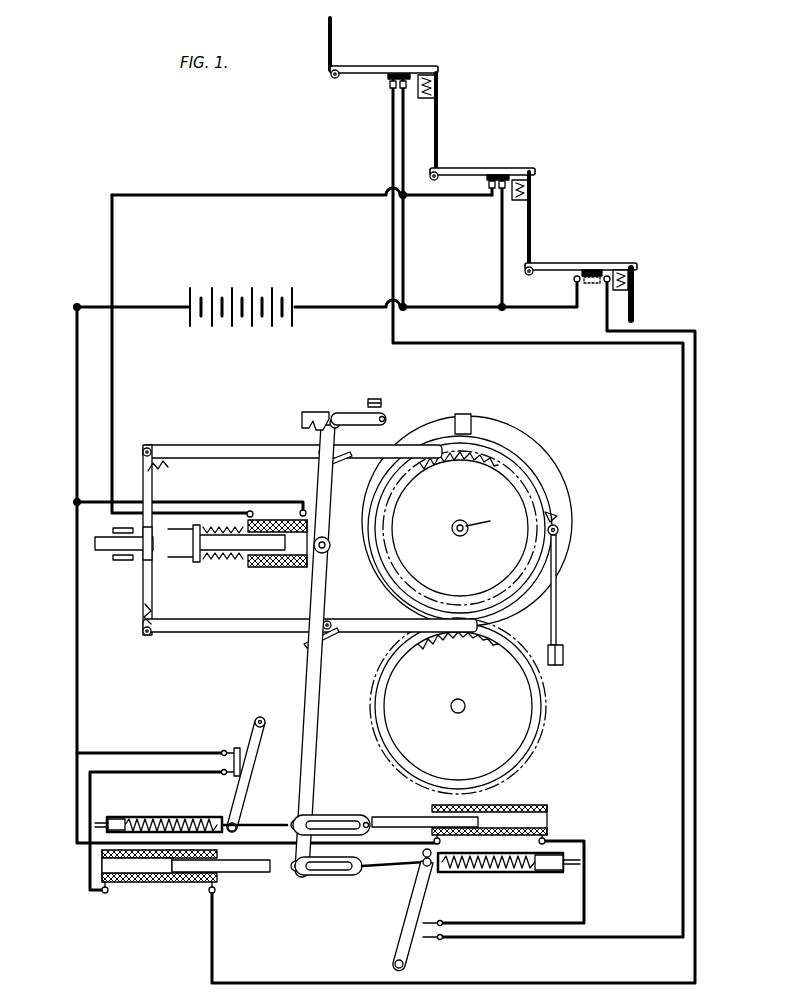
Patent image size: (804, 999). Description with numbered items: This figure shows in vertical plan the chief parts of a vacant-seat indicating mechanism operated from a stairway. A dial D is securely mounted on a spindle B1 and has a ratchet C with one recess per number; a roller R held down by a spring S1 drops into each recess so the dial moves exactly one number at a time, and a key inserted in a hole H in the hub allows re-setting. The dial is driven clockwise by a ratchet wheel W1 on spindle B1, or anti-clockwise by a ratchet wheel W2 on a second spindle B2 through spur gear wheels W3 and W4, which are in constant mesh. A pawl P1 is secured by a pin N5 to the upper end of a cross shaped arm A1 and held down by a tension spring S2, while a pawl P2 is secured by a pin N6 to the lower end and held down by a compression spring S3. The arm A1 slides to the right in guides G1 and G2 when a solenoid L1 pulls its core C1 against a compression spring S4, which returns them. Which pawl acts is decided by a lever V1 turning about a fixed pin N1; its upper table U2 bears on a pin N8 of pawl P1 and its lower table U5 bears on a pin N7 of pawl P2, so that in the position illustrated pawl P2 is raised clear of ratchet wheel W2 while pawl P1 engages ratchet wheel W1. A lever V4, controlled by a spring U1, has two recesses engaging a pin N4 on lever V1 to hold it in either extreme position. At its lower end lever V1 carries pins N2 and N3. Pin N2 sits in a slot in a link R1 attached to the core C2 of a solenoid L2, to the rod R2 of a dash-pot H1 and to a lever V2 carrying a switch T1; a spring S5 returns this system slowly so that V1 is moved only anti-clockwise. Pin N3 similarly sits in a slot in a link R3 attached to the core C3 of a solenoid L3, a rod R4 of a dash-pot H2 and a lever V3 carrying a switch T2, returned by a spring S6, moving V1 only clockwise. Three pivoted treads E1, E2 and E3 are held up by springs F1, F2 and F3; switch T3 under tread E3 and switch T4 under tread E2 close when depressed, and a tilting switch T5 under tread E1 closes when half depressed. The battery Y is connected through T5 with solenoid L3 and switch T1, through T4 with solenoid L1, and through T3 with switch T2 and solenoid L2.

The tread E3 is at (363, 67).
The switch T3 is at (388, 78).
The spring F3 is at (438, 84).
The tread E2 is at (451, 169).
The switch T4 is at (487, 182).
The spring F2 is at (531, 188).
The tread E1 is at (555, 263).
The tilting switch T5 is at (577, 279).
The spring F1 is at (636, 284).
The electrical battery Y is at (237, 291).
The dial D is at (500, 426).
The spur gear wheel W3 is at (530, 461).
The ratchet wheel W1 is at (458, 462).
The spindle B1 is at (452, 527).
The hole H is at (485, 520).
The ratchet C is at (556, 516).
The roller R is at (559, 532).
The spring S1 is at (565, 600).
The spur gear wheel W4 is at (543, 741).
The ratchet wheel W2 is at (458, 648).
The spindle B2 is at (451, 707).
The pawl P1 is at (215, 445).
The pin N5 is at (149, 448).
The spring S2 is at (158, 467).
The pin N8 is at (320, 455).
The upper table U2 is at (326, 462).
The pawl P2 is at (198, 626).
The pin N6 is at (144, 637).
The spring S3 is at (152, 630).
The pin N7 is at (330, 623).
The lower table U5 is at (305, 643).
The cross shaped arm A1 is at (198, 540).
The solenoid L1 is at (293, 568).
The core C1 is at (246, 551).
The spring S4 is at (216, 556).
The guide G2 is at (191, 558).
The guide G1 is at (125, 562).
The lever V1 is at (306, 680).
The pin N1 is at (324, 554).
The lever V4 is at (319, 411).
The pin N4 is at (341, 428).
The spring U1 is at (368, 406).
The switch T1 is at (236, 752).
The lever V2 is at (255, 774).
The spring S5 is at (170, 818).
The dash-pot H1 is at (118, 817).
The rod R2 is at (254, 837).
The pin N2 is at (293, 820).
The link R1 is at (341, 815).
The solenoid L2 is at (515, 806).
The core C2 is at (410, 820).
The solenoid L3 is at (131, 881).
The core C3 is at (228, 869).
The pin N3 is at (292, 868).
The link R3 is at (328, 876).
The rod R4 is at (395, 868).
The lever V3 is at (400, 928).
The switch T2 is at (424, 938).
The spring S6 is at (470, 873).
The dash-pot H2 is at (551, 872).